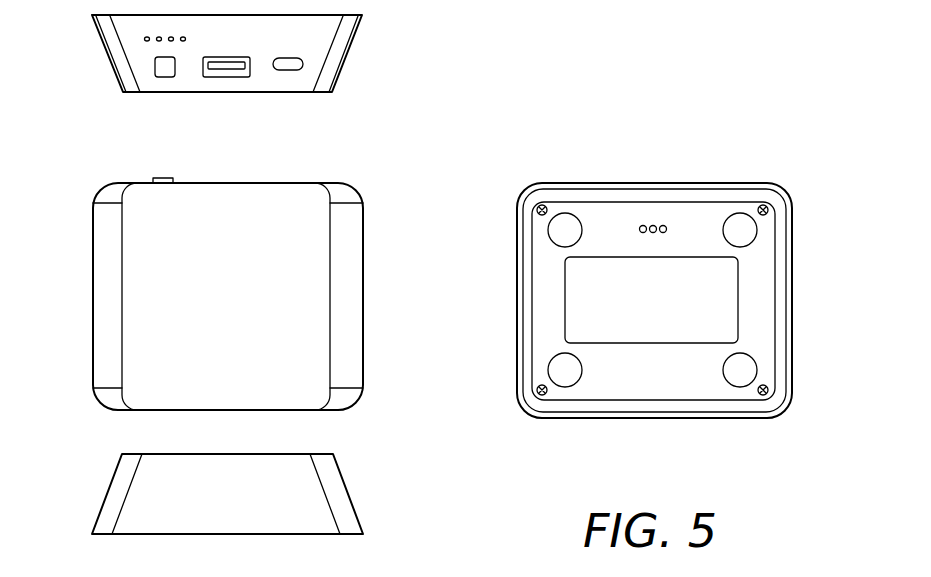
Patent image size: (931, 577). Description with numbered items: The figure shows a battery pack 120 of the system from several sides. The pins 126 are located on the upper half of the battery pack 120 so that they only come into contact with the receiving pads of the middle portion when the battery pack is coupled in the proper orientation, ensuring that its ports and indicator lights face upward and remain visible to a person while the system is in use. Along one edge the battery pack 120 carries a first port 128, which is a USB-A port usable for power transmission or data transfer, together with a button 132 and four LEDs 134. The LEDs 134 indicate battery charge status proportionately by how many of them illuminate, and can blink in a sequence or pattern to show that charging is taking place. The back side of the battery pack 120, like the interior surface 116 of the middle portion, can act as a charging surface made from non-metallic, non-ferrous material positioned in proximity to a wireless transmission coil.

The interior surface 116 is at (640, 378).
The battery pack 120 is at (576, 71).
The pins 126 is at (288, 66).
The first port 128 is at (225, 68).
The button 132 is at (165, 68).
The LEDs 134 is at (140, 40).